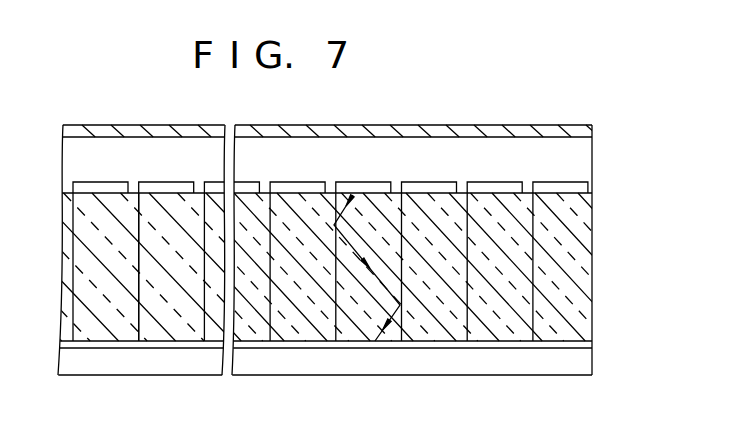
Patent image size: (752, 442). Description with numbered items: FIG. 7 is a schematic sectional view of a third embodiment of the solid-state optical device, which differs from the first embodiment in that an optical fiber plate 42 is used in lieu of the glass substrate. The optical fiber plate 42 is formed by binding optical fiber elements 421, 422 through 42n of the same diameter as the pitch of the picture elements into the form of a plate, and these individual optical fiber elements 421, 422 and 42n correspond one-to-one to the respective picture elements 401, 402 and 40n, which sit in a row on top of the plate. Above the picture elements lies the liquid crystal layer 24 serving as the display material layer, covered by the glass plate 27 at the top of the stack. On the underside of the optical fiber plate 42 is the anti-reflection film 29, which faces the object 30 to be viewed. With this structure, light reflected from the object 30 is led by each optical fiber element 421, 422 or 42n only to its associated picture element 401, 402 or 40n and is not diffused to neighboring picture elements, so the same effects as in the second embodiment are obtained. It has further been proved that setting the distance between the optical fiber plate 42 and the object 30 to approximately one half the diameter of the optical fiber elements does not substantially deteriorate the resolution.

The glass plate 27 is at (593, 128).
The liquid crystal layer 24 is at (593, 162).
The optical fiber plate 42 is at (357, 304).
The anti-reflection film 29 is at (582, 343).
The object 30 is at (582, 366).
The picture element 401 is at (98, 182).
The picture element 402 is at (158, 182).
The picture element 40n is at (553, 182).
The optical fiber element 421 is at (97, 338).
The optical fiber element 422 is at (166, 338).
The optical fiber element 42n is at (557, 303).